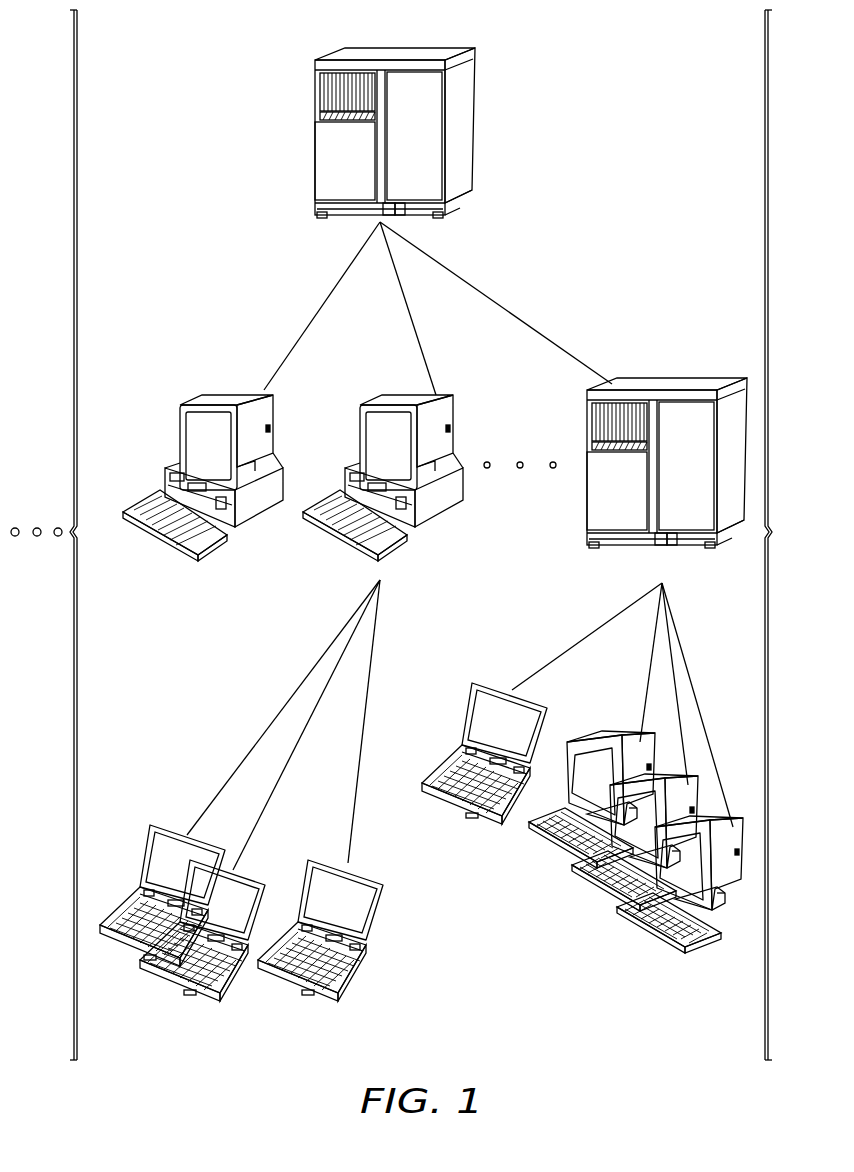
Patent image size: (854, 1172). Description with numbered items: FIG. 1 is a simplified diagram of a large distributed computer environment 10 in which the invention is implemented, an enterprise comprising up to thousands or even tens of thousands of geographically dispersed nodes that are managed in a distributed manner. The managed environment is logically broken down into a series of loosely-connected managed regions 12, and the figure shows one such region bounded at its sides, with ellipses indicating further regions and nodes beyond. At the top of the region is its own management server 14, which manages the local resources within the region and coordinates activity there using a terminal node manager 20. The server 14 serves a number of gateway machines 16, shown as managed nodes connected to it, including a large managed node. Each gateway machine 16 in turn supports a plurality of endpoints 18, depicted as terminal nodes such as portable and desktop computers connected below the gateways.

The distributed computer environment 10 is at (185, 731).
The managed region 12 is at (788, 206).
The management server 14 is at (472, 60).
The gateway machine 16 is at (180, 430).
The endpoint 18 is at (421, 866).
The terminal node manager 20 is at (276, 46).